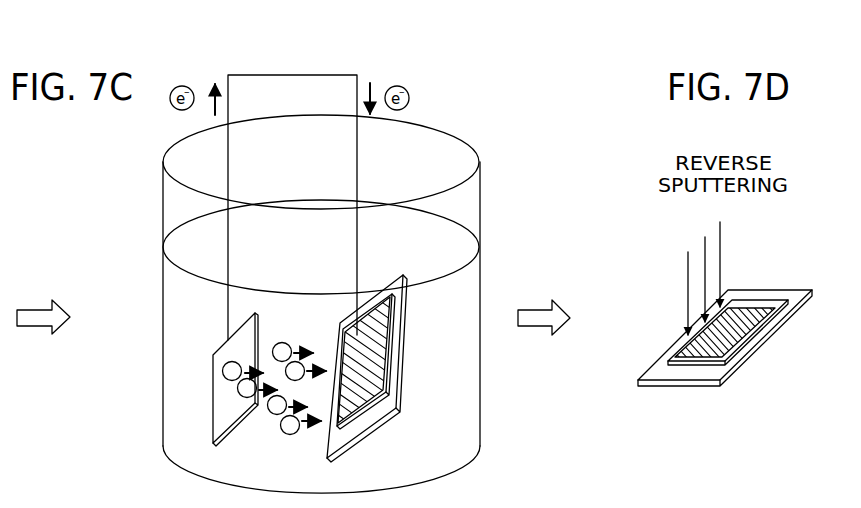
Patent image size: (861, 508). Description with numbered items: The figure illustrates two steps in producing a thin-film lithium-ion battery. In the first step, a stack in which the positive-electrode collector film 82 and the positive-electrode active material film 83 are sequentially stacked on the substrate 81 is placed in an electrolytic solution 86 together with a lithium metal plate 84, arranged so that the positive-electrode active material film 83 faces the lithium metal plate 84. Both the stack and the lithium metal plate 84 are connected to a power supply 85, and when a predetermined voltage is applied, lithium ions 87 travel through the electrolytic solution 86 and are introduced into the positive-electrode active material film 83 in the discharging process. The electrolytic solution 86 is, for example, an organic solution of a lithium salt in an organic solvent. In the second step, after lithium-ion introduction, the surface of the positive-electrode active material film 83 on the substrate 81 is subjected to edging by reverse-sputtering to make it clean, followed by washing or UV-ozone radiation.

In FIG. 7C, the substrate 81 is at (403, 342).
In FIG. 7D, the substrate 81 is at (767, 335).
In FIG. 7C, the positive-electrode collector film 82 is at (392, 298).
In FIG. 7D, the positive-electrode collector film 82 is at (780, 299).
In FIG. 7C, the positive-electrode active material film 83 is at (370, 377).
In FIG. 7D, the positive-electrode active material film 83 is at (735, 352).
In FIG. 7C, the lithium metal plate 84 is at (222, 408).
In FIG. 7C, the power supply 85 is at (307, 52).
In FIG. 7C, the electrolytic solution 86 is at (480, 443).
In FIG. 7C, the lithium ions 87 is at (288, 437).